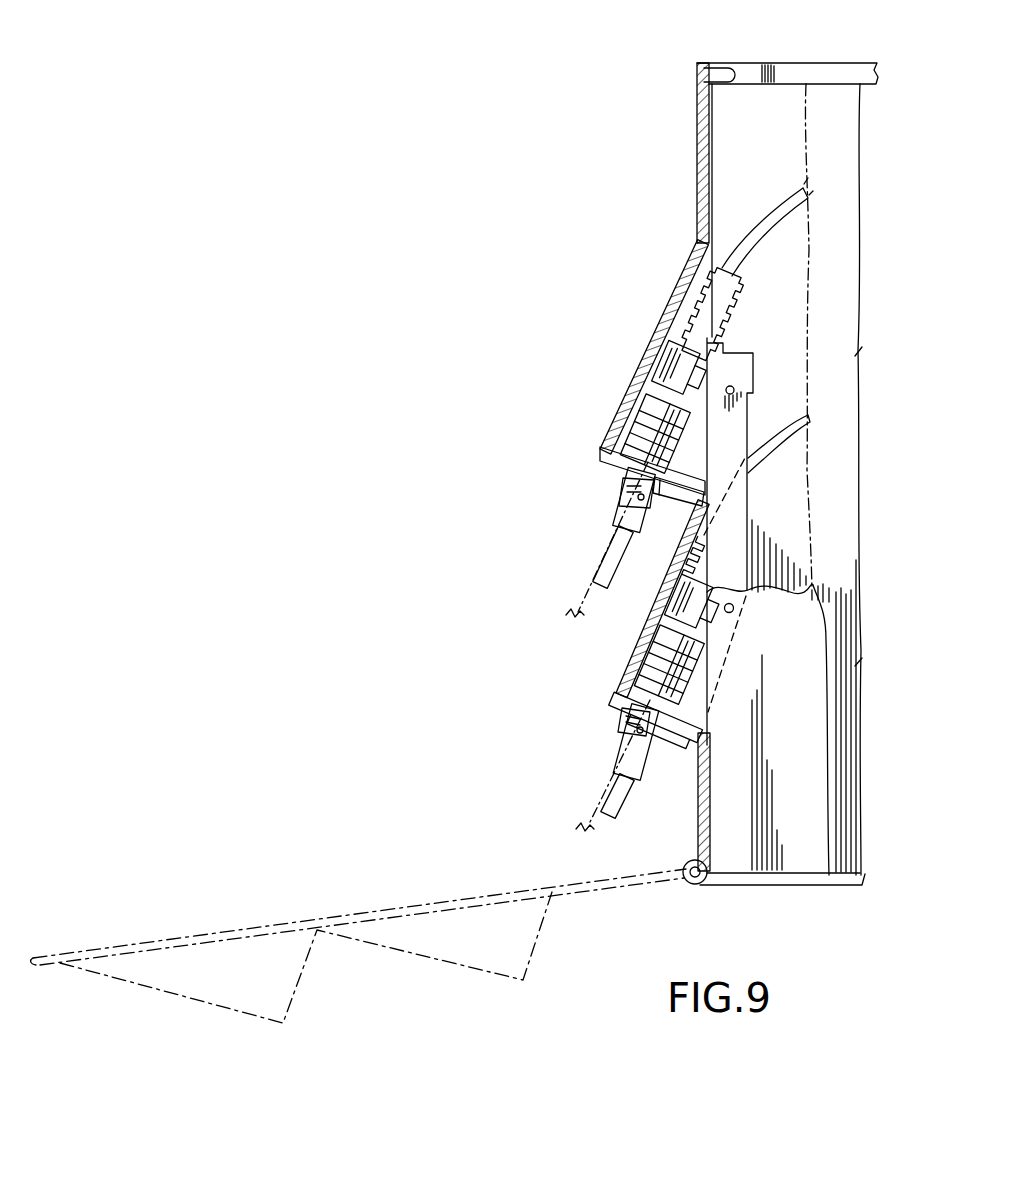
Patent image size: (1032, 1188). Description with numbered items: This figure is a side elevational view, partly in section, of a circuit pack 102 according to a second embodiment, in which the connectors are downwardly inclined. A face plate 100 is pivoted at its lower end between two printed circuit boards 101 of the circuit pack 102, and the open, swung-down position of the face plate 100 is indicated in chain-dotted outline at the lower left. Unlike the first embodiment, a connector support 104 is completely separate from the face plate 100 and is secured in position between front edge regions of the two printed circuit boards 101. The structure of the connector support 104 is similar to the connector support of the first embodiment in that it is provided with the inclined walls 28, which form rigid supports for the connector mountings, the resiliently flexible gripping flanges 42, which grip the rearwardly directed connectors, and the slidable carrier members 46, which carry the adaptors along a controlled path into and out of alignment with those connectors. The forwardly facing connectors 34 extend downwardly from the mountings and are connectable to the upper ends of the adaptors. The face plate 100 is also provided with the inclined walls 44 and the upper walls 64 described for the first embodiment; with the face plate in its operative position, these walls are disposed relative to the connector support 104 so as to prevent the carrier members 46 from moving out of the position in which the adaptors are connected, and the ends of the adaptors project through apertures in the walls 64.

The face plate 100 is at (697, 128).
The printed circuit boards 101 is at (857, 201).
The circuit pack 102 is at (786, 64).
The connector support 104 is at (752, 418).
The gripping flanges 42 is at (692, 373).
The carrier member 46 is at (662, 437).
The connector 34 is at (618, 525).
The inclined walls 44 is at (641, 627).
The rear wall 28 is at (654, 665).
The upper walls 64 is at (630, 706).